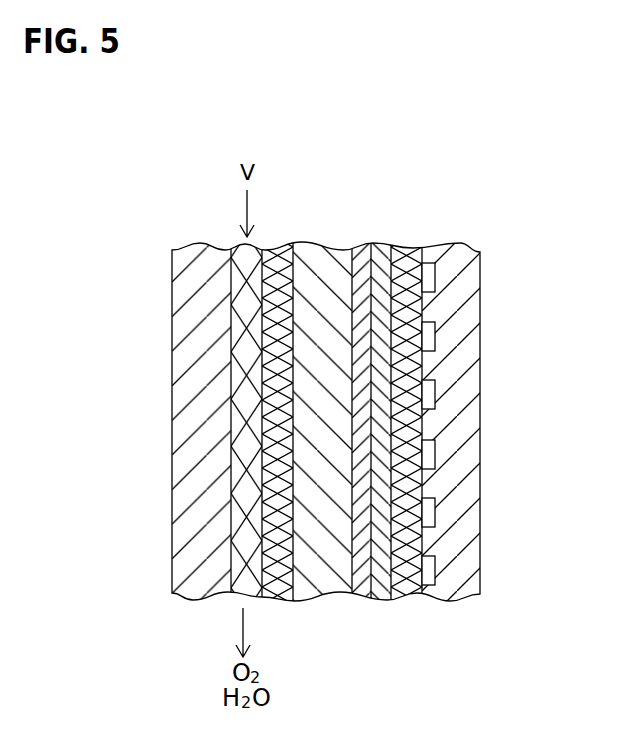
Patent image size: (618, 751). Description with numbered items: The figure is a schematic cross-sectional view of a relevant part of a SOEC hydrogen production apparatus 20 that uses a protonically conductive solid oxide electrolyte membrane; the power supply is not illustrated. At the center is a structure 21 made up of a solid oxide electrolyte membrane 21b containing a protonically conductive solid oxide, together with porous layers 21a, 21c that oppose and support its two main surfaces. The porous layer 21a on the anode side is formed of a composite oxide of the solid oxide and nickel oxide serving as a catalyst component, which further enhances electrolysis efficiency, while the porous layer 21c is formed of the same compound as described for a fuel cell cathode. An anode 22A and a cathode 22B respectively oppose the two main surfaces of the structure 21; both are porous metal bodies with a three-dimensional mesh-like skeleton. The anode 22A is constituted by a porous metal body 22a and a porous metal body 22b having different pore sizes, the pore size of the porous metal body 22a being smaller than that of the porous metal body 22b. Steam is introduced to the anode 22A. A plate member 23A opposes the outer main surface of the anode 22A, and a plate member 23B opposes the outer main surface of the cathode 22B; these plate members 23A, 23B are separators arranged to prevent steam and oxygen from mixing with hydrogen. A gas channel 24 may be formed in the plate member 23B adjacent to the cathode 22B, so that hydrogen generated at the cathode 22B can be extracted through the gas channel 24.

The hydrogen production apparatus 20 is at (480, 171).
The structure 21 is at (367, 365).
The porous layer 21a is at (318, 262).
The solid oxide electrolyte membrane 21b is at (360, 258).
The porous layer 21c is at (404, 389).
The anode 22A is at (309, 487).
The porous metal body 22a is at (280, 592).
The porous metal body 22b is at (250, 592).
The cathode 22B is at (403, 593).
The plate member 23A is at (178, 539).
The plate member 23B is at (473, 313).
The gas channel 24 is at (430, 452).